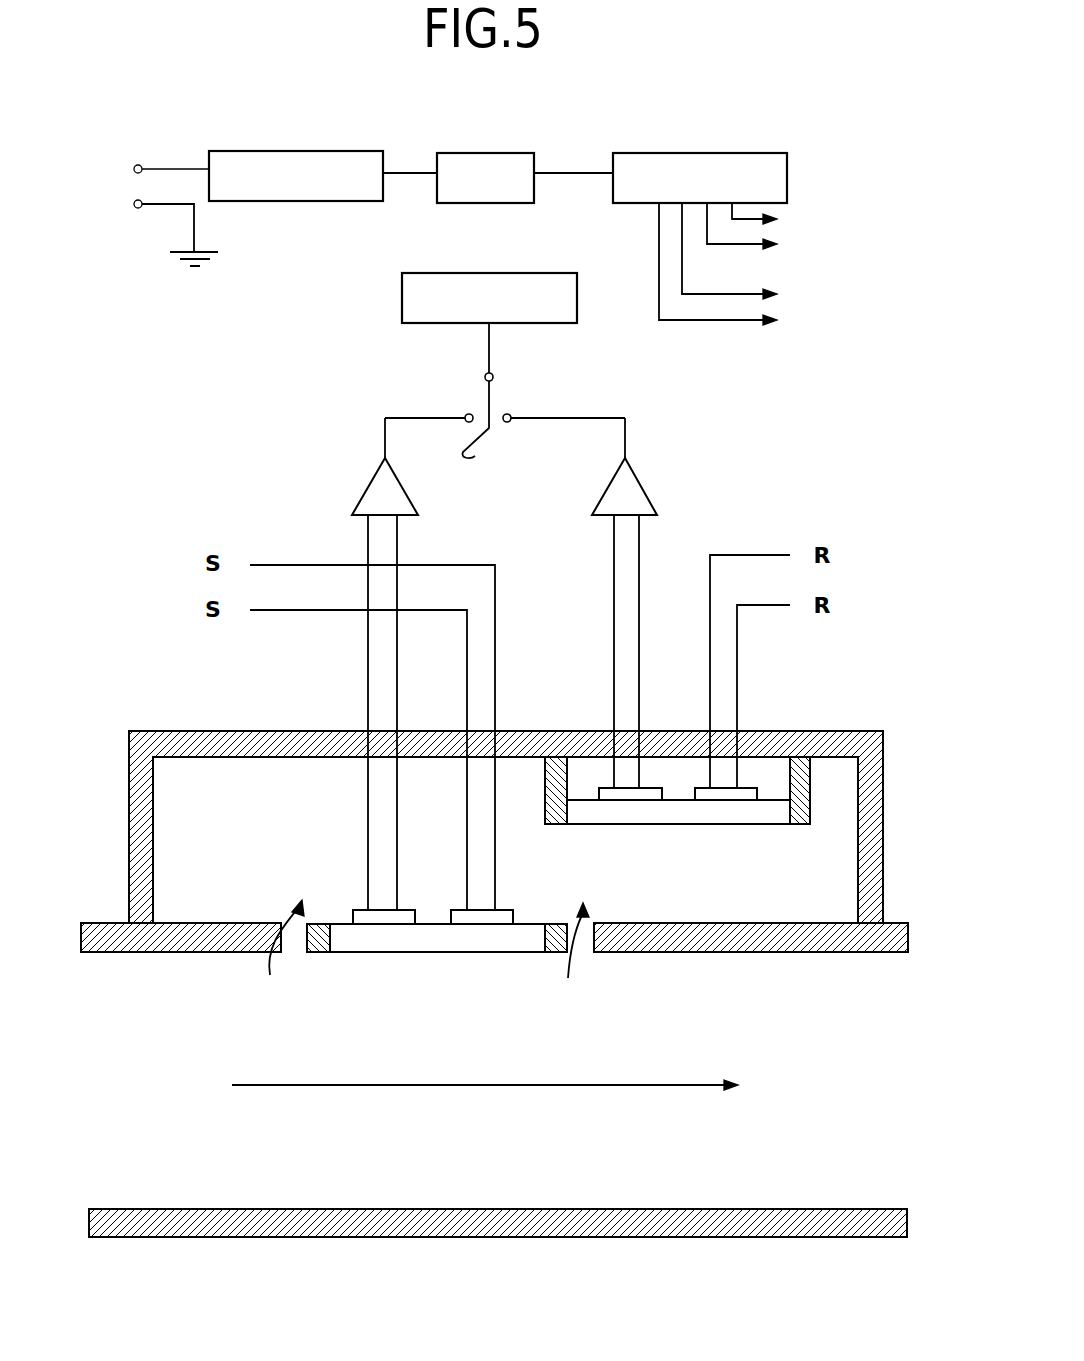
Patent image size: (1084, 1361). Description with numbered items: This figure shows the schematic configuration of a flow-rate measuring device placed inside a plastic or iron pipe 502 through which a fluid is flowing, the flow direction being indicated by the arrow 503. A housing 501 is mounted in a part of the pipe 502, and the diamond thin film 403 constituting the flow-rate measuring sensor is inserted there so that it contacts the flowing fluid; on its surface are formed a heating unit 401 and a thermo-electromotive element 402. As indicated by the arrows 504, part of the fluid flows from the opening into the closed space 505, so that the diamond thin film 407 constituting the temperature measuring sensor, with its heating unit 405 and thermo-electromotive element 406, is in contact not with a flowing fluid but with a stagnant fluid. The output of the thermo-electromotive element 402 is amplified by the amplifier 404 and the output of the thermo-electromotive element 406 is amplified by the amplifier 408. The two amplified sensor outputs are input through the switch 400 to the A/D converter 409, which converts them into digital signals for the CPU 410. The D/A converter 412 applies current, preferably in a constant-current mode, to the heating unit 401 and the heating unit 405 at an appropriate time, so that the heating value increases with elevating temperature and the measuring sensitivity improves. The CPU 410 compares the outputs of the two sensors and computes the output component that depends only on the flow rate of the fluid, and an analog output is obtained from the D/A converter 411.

The switch 400 is at (505, 393).
The heating unit 401 is at (482, 916).
The thermo-electromotive element 402 is at (375, 928).
The diamond thin film 403 is at (402, 953).
The amplifier 404 is at (385, 482).
The heating unit 405 is at (727, 797).
The thermo-electromotive element 406 is at (622, 797).
The diamond thin film 407 is at (636, 822).
The amplifier 408 is at (630, 488).
The A/D converter 409 is at (470, 273).
The CPU 410 is at (458, 152).
The D/A converter 411 is at (272, 151).
The D/A converter 412 is at (718, 152).
The housing 501 is at (290, 731).
The pipe 502 is at (195, 953).
The transport direction 503 is at (577, 1087).
The fluid inflow 504 is at (290, 925).
The closed space 505 is at (692, 908).